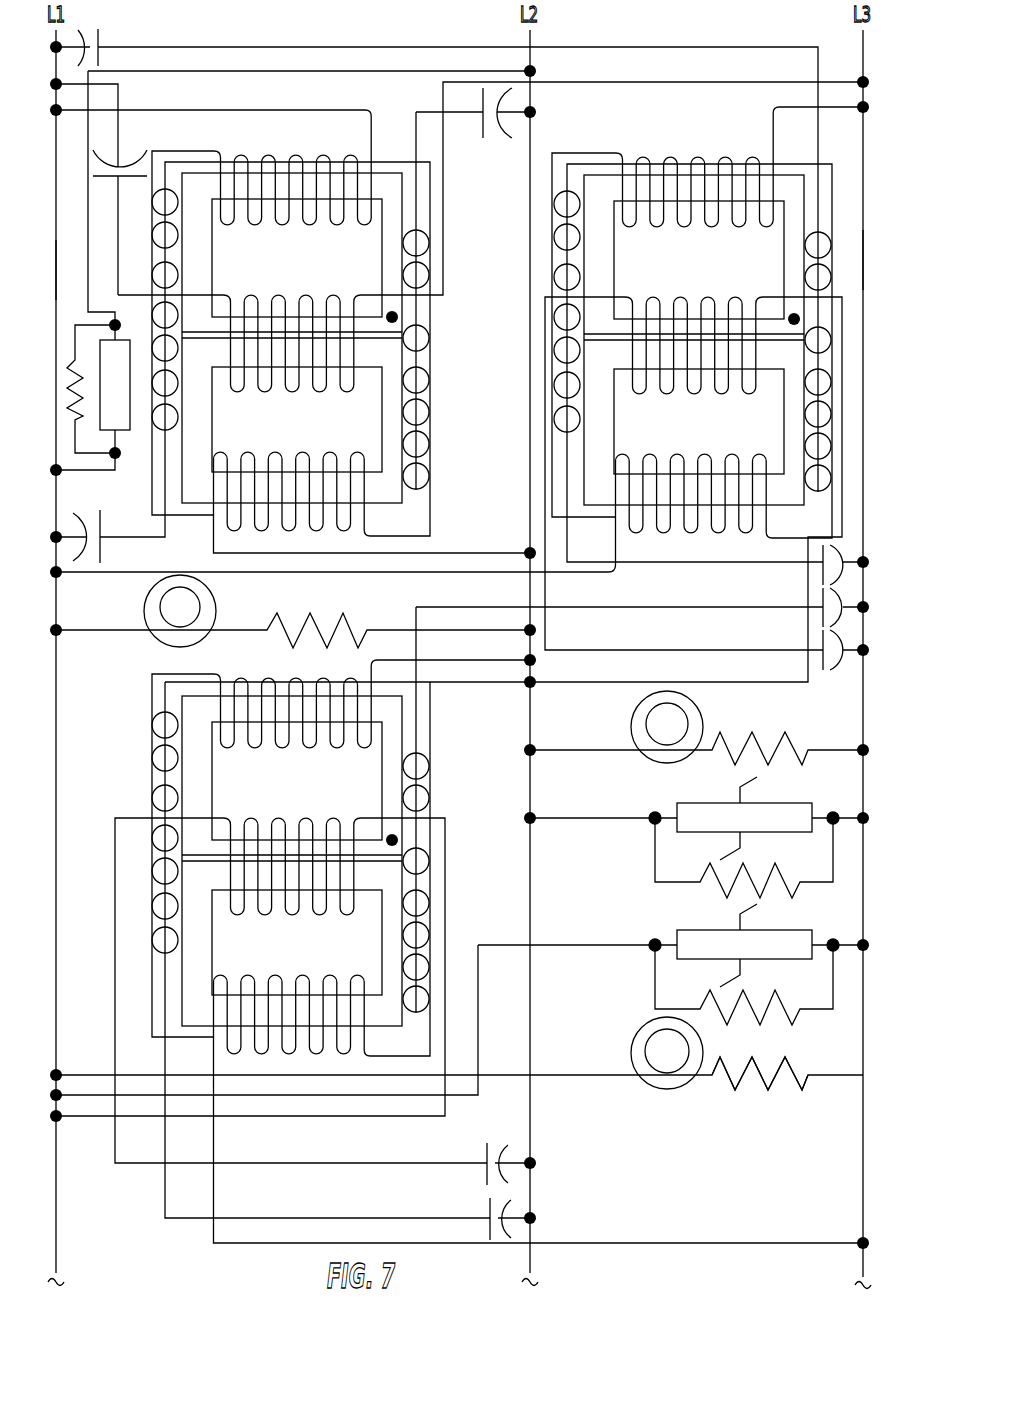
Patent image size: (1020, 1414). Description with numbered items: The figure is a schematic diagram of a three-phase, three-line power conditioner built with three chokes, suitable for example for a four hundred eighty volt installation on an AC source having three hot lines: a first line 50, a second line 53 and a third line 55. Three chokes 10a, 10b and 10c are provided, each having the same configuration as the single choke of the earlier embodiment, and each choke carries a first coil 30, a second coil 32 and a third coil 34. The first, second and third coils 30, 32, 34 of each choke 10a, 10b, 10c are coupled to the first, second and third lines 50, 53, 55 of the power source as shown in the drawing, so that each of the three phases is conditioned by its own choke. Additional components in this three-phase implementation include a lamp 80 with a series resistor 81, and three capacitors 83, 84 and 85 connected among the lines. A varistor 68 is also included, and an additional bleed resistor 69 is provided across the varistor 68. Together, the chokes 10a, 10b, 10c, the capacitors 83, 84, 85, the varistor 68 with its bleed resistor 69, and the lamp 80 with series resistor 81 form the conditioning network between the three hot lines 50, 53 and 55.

The choke 10a is at (463, 408).
The choke 10b is at (692, 307).
The choke 10c is at (258, 846).
The first coil 30 is at (268, 158).
The second coil 32 is at (250, 296).
The third coil 34 is at (252, 454).
The line 50 is at (58, 290).
The line 53 is at (525, 228).
The line 55 is at (863, 252).
The varistor 68 is at (143, 390).
The bleed resistor 69 is at (94, 378).
The lamp 80 is at (644, 1023).
The series resistor 81 is at (744, 1079).
The capacitor 83 is at (485, 1157).
The capacitor 84 is at (487, 1215).
The capacitor 85 is at (842, 598).